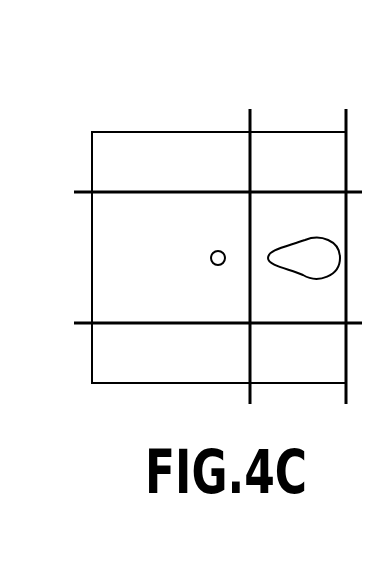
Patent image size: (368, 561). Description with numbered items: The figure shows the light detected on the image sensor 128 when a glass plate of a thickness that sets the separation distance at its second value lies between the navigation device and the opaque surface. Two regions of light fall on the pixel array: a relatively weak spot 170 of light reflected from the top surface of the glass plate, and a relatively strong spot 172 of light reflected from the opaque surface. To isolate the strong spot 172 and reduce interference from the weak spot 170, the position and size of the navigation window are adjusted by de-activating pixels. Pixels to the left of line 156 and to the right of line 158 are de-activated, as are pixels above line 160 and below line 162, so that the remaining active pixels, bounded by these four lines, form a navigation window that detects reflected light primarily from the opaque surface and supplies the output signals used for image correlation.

The image sensor 128 is at (132, 132).
The line 156 is at (250, 118).
The line 158 is at (346, 118).
The line 160 is at (84, 190).
The line 162 is at (84, 321).
The relatively weak spot 170 is at (218, 250).
The relatively strong spot 172 is at (333, 235).